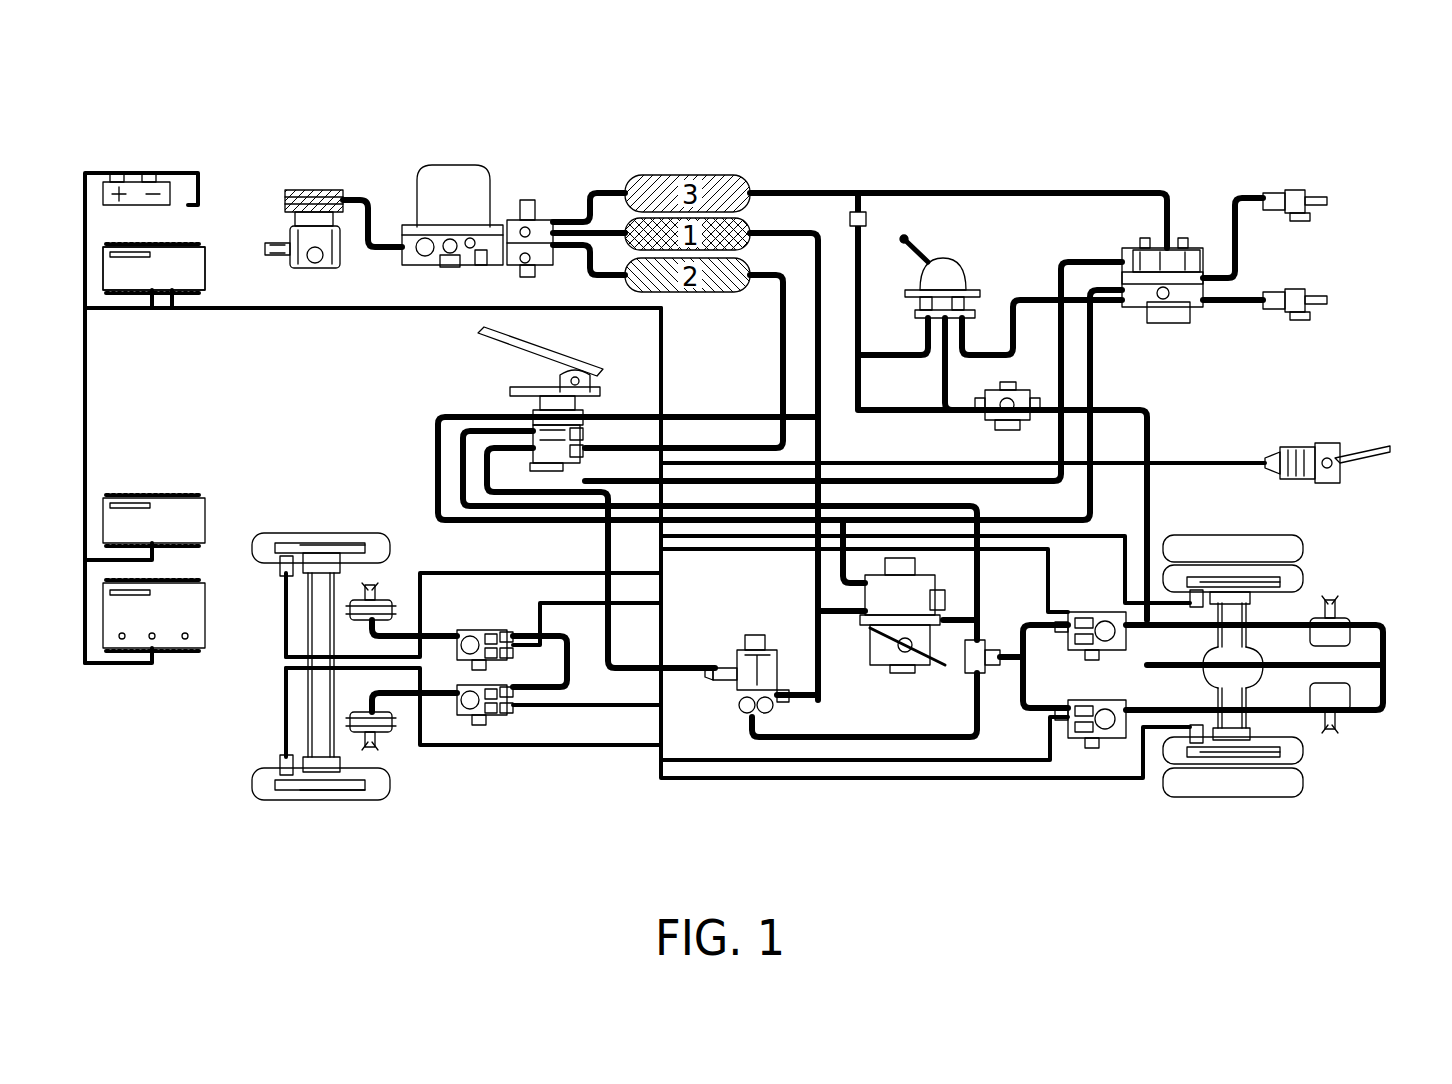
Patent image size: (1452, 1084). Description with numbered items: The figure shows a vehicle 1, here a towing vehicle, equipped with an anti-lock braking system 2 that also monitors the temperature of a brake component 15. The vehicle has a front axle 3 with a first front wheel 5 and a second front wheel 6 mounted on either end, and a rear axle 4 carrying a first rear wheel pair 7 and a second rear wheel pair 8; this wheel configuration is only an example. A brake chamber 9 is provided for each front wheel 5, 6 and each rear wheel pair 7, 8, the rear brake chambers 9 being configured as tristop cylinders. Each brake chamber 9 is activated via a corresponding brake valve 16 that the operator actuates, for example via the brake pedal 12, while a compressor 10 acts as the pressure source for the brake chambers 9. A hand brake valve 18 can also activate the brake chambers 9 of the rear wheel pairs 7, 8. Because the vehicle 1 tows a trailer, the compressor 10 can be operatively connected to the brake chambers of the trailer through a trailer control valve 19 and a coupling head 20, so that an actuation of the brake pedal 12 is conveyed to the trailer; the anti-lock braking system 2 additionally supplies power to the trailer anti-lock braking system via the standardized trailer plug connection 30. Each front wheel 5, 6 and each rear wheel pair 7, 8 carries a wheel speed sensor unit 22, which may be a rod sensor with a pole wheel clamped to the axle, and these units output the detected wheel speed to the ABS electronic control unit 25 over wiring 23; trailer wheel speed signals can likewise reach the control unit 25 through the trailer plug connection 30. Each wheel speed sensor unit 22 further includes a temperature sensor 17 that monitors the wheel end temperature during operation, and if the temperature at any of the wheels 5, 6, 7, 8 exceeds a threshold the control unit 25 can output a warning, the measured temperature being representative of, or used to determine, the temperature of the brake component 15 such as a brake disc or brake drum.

The vehicle 1 is at (180, 766).
The anti-lock braking system 2 is at (198, 122).
The front axle 3 is at (320, 692).
The rear axle 4 is at (1250, 685).
The first front wheel 5 is at (260, 790).
The second front wheel 6 is at (340, 535).
The first rear wheel pair 7 is at (1265, 800).
The second rear wheel pair 8 is at (1207, 535).
The brake chamber 9 is at (375, 598).
The compressor 10 is at (320, 190).
The brake pedal 12 is at (520, 378).
The brake component 15 is at (300, 578).
The brake valve 16 is at (510, 700).
The temperature sensor 17 is at (280, 575).
The hand brake valve 18 is at (960, 255).
The trailer control valve 19 is at (1188, 325).
The coupling head 20 is at (1318, 303).
The wheel speed sensor unit 22 is at (280, 568).
The wiring 23 is at (665, 348).
The ABS electronic control unit 25 is at (208, 290).
The trailer plug connection 30 is at (1335, 480).